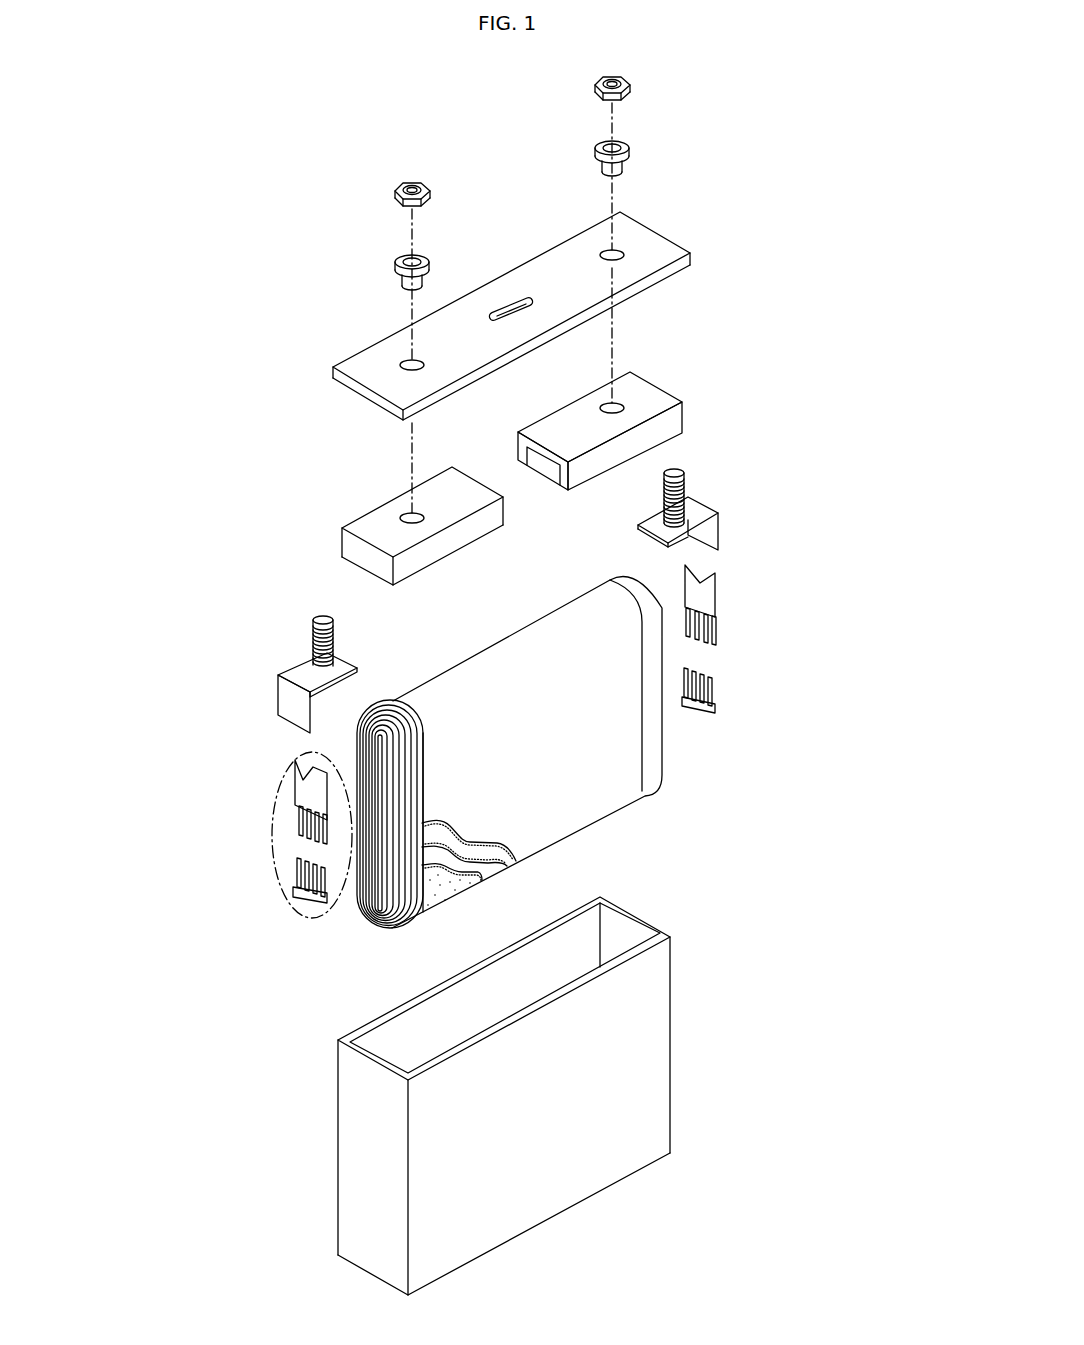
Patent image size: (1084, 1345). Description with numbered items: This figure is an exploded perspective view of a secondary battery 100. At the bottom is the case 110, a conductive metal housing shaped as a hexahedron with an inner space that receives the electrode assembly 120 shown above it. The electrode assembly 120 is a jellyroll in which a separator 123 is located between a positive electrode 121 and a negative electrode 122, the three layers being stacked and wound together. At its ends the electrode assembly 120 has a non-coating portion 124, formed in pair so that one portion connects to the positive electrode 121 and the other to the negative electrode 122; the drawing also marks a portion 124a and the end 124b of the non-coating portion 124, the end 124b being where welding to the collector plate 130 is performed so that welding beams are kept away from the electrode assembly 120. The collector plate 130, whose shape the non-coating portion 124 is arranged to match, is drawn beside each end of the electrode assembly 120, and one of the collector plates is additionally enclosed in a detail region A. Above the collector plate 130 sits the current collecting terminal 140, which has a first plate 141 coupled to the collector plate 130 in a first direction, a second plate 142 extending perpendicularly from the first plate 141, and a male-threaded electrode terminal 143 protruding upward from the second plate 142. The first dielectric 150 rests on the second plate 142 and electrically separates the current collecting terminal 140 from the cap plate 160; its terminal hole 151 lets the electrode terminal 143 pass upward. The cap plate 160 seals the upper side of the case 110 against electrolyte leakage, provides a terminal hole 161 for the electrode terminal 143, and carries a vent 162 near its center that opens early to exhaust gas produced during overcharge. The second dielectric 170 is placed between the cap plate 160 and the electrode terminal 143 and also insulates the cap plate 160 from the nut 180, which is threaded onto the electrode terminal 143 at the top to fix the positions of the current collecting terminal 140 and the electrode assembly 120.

The secondary battery 100 is at (272, 105).
The case 110 is at (668, 1015).
The electrode assembly 120 is at (523, 799).
The positive electrode 121 is at (437, 893).
The negative electrode 122 is at (513, 864).
The separator 123 is at (492, 868).
The non-coating portion 124 is at (352, 860).
The outer separator portion 124a is at (410, 908).
The end surface of the non-coating portion 124b is at (390, 895).
The collector plate 130 is at (745, 615).
The current collecting terminal 140 is at (669, 486).
The first plate 141 is at (720, 535).
The second plate 142 is at (693, 523).
The electrode terminal 143 is at (675, 468).
The first dielectric 150 is at (616, 410).
The terminal hole 151 is at (605, 405).
The cap plate 160 is at (529, 303).
The terminal hole 161 is at (607, 252).
The vent 162 is at (517, 308).
The second dielectric 170 is at (630, 152).
The nut 180 is at (630, 93).
The detail region A is at (280, 892).